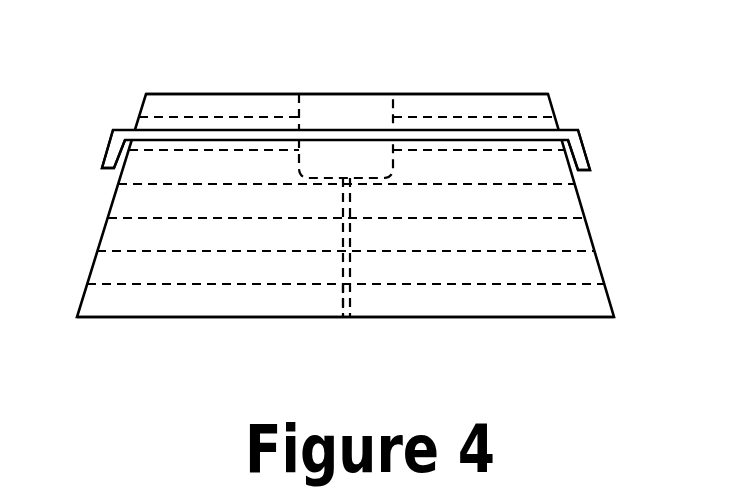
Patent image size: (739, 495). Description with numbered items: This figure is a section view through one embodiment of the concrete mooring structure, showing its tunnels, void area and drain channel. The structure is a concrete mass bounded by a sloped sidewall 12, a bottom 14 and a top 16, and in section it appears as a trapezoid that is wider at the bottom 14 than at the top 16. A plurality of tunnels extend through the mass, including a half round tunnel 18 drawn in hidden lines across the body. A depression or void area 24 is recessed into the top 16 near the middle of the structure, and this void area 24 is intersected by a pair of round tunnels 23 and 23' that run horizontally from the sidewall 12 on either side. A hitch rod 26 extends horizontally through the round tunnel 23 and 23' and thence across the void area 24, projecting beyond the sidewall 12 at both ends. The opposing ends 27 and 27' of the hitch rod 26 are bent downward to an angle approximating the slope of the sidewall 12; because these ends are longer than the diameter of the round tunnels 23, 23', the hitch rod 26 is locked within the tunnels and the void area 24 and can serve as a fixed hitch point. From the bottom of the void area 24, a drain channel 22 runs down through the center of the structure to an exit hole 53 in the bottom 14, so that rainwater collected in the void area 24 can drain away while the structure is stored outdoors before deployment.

The sidewall 12 is at (597, 258).
The bottom 14 is at (152, 317).
The top 16 is at (202, 94).
The half round tunnel 18 is at (528, 285).
The drain channel 22 is at (343, 292).
The round tunnel 23 is at (474, 86).
The round tunnel 23' is at (215, 86).
The void area 24 is at (376, 105).
The hitch rod 26 is at (332, 133).
The opposing end of hitch rod 27 is at (614, 145).
The opposing end of hitch rod 27' is at (82, 144).
The exit hole 53 is at (347, 317).